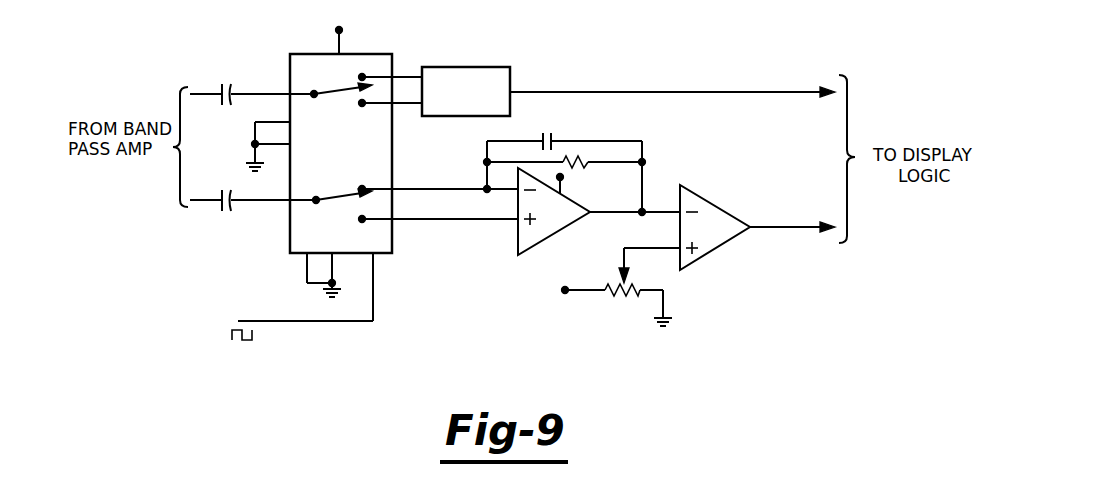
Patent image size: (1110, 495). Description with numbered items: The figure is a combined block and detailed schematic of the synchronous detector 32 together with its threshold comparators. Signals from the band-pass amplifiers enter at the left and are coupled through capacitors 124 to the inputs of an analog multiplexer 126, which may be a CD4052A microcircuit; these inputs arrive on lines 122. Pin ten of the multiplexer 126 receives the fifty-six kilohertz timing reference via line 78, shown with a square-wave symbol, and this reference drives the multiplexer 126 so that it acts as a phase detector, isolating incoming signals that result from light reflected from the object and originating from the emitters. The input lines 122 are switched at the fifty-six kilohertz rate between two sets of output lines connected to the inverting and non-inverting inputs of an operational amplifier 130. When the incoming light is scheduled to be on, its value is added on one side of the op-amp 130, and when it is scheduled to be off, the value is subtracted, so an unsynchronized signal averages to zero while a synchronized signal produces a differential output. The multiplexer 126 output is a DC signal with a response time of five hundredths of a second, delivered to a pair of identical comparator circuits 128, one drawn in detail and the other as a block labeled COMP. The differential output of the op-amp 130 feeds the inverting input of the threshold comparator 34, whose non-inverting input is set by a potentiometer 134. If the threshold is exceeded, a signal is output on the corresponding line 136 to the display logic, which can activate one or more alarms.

The synchronous detector 32 is at (382, 350).
The threshold comparator 34 is at (730, 243).
The line 78 is at (373, 305).
The input lines 122 is at (200, 200).
The capacitors 124 is at (234, 91).
The analog multiplexer 126 is at (392, 54).
The comparator circuit 128 is at (511, 72).
The operational amplifier 130 is at (558, 231).
The potentiometer 134 is at (622, 293).
The line 136 is at (750, 94).